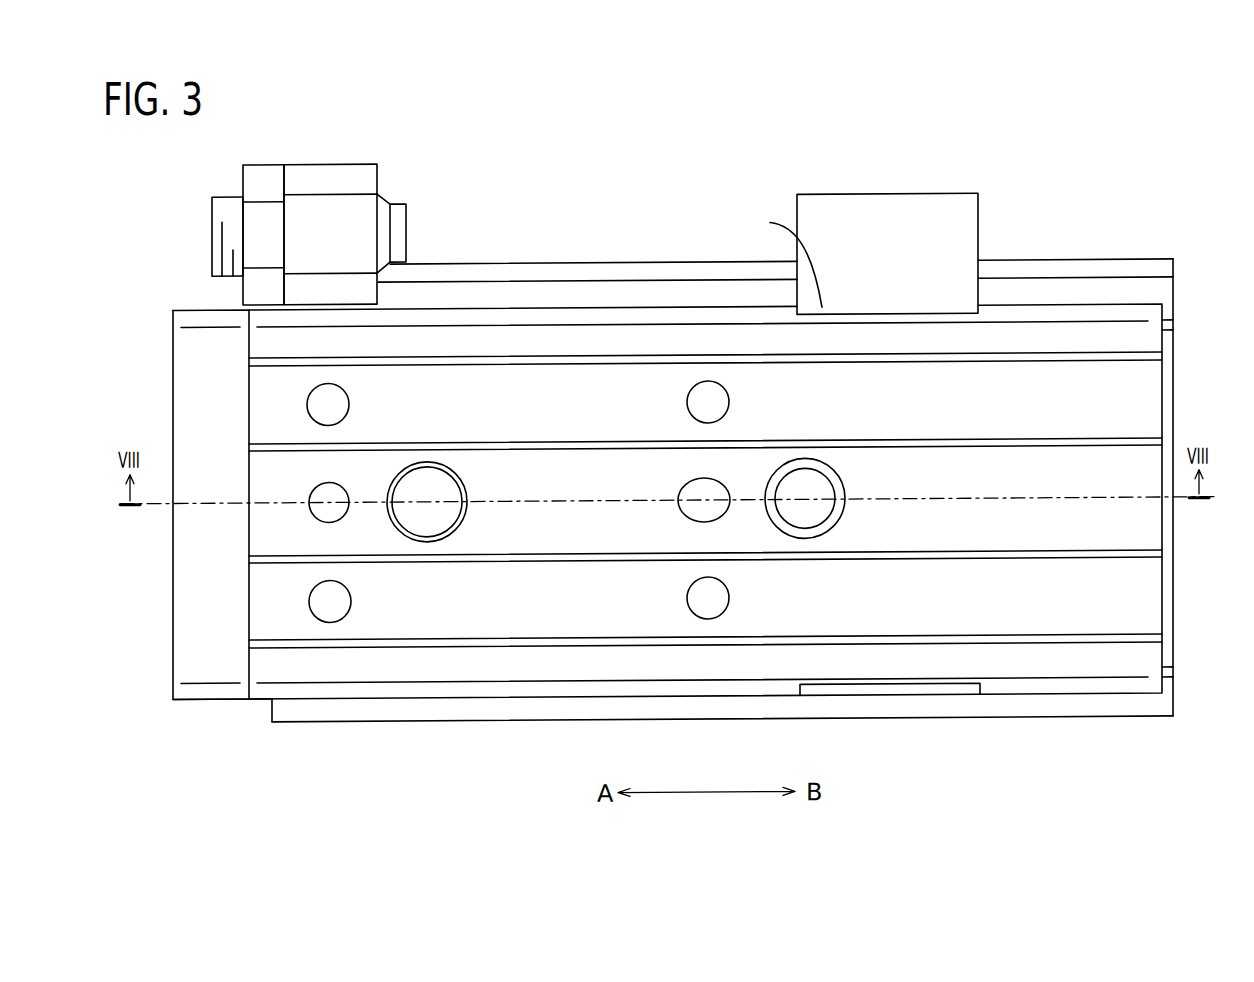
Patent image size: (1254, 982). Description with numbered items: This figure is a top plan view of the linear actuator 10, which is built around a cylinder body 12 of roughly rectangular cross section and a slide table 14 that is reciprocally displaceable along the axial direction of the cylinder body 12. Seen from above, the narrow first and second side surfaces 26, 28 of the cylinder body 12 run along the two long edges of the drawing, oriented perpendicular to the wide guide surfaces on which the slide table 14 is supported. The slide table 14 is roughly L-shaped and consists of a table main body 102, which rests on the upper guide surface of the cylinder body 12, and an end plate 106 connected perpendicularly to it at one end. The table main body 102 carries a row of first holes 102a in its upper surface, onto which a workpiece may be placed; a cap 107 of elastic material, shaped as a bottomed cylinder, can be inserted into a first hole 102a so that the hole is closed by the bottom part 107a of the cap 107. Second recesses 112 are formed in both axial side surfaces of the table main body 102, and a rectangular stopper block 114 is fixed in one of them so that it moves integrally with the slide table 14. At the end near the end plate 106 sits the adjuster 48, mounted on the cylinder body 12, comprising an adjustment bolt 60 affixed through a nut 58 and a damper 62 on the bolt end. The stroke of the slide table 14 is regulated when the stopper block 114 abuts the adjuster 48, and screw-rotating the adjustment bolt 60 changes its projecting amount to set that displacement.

The linear actuator 10 is at (1104, 128).
The cylinder body 12 is at (1166, 304).
The slide table 14 is at (1108, 623).
The first side surface 26 is at (735, 723).
The second side surface 28 is at (1068, 264).
The adjuster 48 is at (307, 209).
The nut 58 is at (252, 180).
The adjustment bolt 60 is at (228, 237).
The damper 62 is at (402, 232).
The table main body 102 is at (523, 389).
The first hole 102a is at (445, 537).
The end plate 106 is at (190, 663).
The cap 107 is at (443, 494).
The bottom part 107a is at (405, 494).
The second recess 112 is at (906, 741).
The stopper block 114 is at (873, 206).